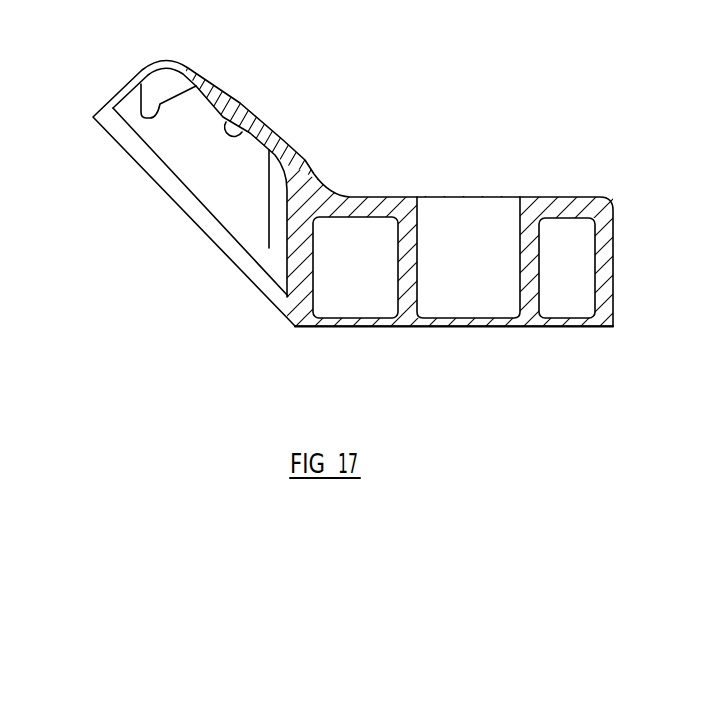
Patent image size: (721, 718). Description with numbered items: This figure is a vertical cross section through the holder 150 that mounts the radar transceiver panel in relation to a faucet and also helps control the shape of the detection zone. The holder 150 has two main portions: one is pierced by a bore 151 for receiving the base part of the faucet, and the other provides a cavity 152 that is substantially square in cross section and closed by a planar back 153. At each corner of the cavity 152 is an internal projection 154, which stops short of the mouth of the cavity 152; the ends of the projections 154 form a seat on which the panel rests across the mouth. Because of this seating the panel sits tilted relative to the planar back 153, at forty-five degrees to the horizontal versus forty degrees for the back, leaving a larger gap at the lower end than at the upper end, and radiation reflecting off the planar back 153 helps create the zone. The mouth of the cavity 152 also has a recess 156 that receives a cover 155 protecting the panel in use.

The holder 150 is at (540, 157).
The bore 151 is at (518, 265).
The cavity 152 is at (232, 188).
The planar back 153 is at (256, 118).
The internal projection 154 is at (160, 100).
The cover 155 is at (152, 162).
The recess 156 is at (116, 104).